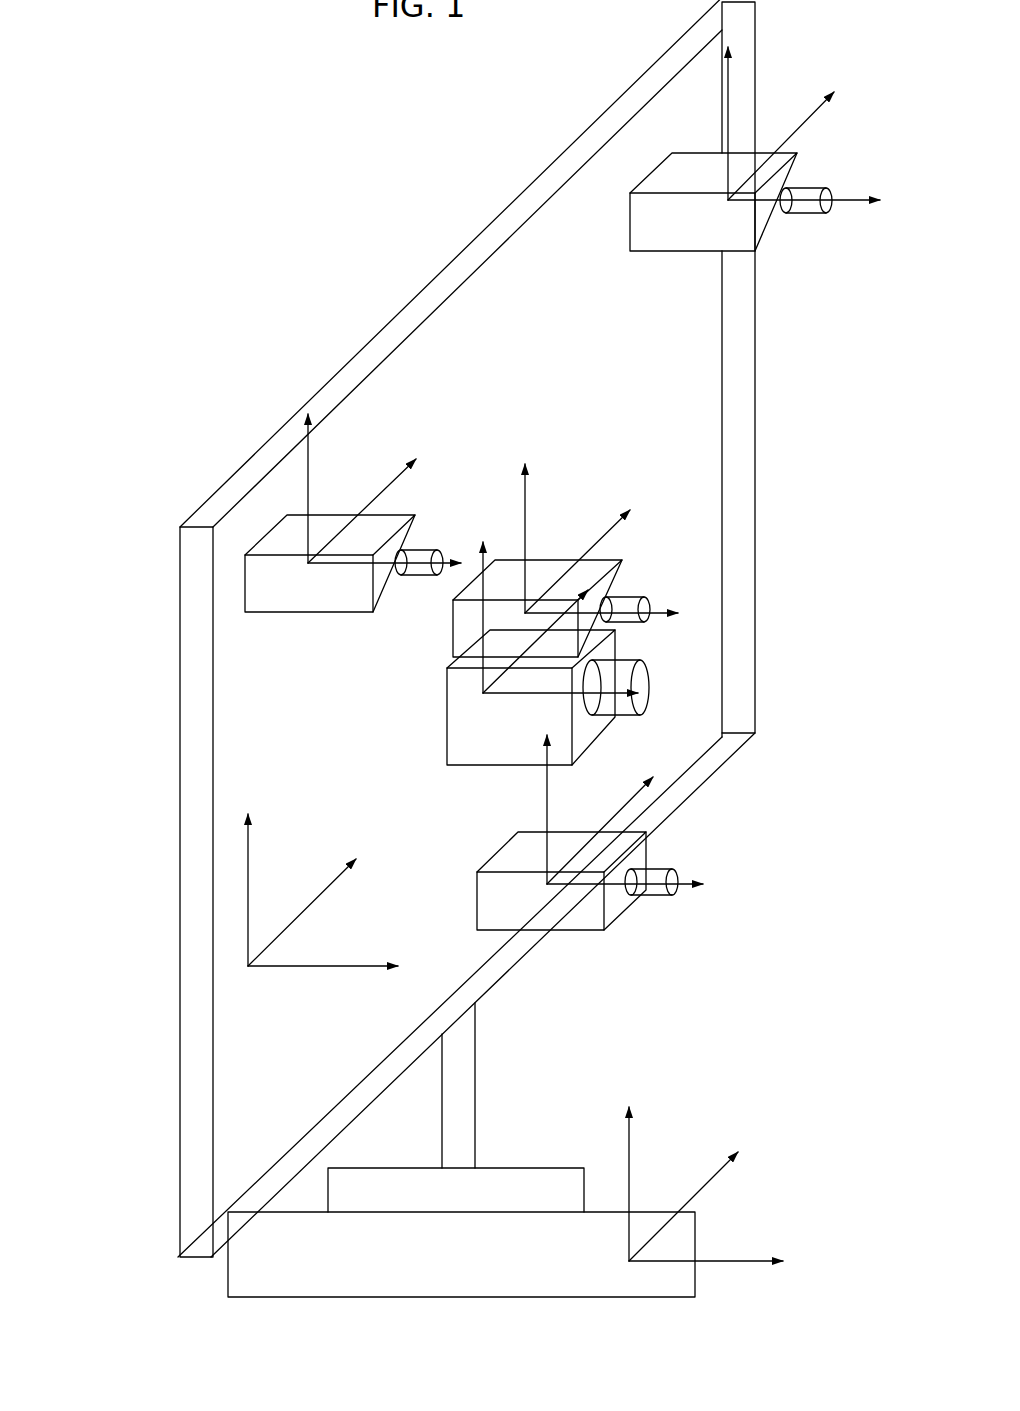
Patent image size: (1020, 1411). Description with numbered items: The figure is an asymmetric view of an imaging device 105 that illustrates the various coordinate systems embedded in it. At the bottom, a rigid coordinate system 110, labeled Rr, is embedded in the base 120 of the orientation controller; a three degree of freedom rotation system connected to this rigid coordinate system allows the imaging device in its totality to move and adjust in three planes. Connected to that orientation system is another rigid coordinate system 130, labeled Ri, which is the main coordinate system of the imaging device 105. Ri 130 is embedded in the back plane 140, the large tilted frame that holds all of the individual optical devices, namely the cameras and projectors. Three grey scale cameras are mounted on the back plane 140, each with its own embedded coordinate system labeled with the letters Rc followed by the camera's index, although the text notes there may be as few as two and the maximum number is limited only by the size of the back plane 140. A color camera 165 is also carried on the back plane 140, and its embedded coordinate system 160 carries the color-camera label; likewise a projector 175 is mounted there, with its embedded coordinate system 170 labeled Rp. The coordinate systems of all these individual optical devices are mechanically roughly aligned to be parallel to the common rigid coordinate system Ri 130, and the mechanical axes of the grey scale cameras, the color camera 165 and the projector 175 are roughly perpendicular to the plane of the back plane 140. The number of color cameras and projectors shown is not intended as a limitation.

The imaging device 105 is at (318, 355).
The rigid coordinate system 110 is at (718, 1262).
The base 120 is at (600, 1212).
The rigid coordinate system 130 is at (283, 968).
The back plane 140 is at (228, 766).
The coordinate system 160 is at (522, 602).
The color camera 165 is at (453, 643).
The coordinate system 170 is at (490, 700).
The projector 175 is at (462, 762).